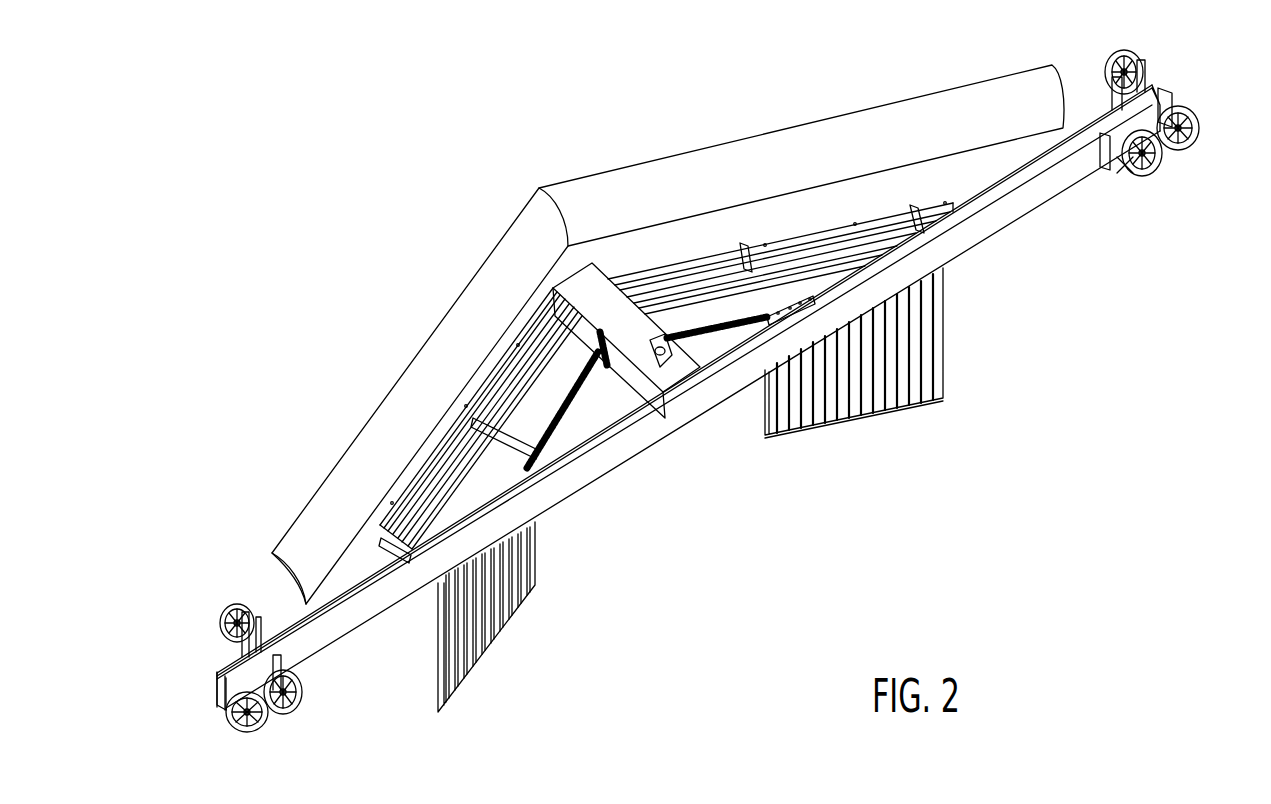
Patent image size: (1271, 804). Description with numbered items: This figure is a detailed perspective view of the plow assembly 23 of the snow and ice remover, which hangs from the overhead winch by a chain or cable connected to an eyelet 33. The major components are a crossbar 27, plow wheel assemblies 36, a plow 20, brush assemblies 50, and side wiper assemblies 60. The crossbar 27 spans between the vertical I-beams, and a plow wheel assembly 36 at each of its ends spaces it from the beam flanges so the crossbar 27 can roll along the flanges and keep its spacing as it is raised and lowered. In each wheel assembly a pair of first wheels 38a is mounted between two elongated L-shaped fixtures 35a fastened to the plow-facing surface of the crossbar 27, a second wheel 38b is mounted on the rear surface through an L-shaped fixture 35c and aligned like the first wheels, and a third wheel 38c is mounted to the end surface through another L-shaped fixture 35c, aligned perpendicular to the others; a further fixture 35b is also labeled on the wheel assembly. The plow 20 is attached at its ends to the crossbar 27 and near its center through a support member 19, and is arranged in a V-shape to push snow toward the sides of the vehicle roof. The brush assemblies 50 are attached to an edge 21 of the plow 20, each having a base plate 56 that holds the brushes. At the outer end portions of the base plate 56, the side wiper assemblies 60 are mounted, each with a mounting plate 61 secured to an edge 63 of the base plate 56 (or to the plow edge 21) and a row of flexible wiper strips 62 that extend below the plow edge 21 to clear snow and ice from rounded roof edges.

The support member 19 is at (572, 287).
The plow 20 is at (438, 353).
The edge 21 is at (397, 520).
The plow assembly 23 is at (354, 178).
The crossbar 27 is at (1028, 200).
The eyelet 33 is at (665, 367).
The L-shaped fixture 35a is at (262, 620).
The bracket plate 35b is at (292, 675).
The L-shaped fixture 35c is at (225, 700).
The plow wheel assembly 36 is at (220, 588).
The first wheel 38a is at (220, 618).
The second wheel 38b is at (303, 703).
The third wheel 38c is at (227, 720).
The brush assembly 50 is at (716, 300).
The base plate 56 is at (587, 385).
The side wiper assembly 60 is at (420, 673).
The mounting plate 61 is at (547, 437).
The wiper strip 62 is at (544, 590).
The edge 63 is at (577, 392).